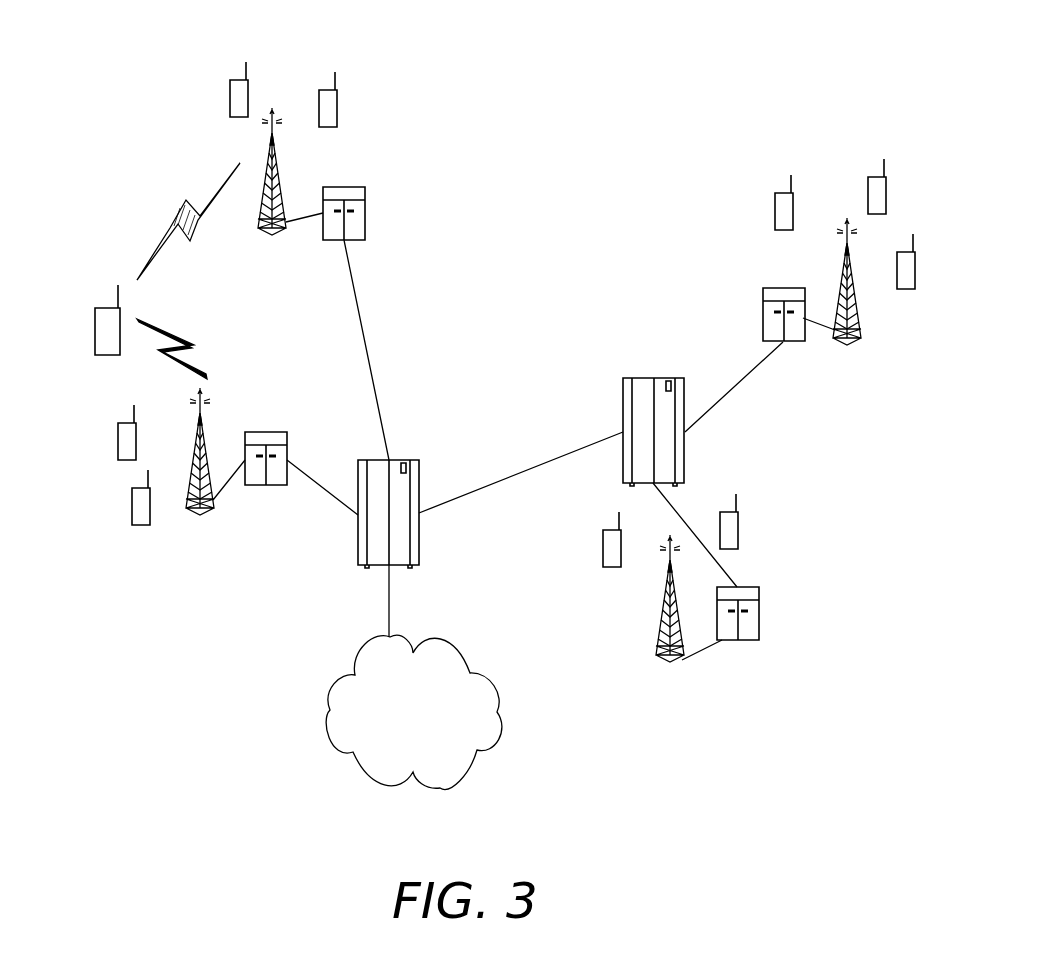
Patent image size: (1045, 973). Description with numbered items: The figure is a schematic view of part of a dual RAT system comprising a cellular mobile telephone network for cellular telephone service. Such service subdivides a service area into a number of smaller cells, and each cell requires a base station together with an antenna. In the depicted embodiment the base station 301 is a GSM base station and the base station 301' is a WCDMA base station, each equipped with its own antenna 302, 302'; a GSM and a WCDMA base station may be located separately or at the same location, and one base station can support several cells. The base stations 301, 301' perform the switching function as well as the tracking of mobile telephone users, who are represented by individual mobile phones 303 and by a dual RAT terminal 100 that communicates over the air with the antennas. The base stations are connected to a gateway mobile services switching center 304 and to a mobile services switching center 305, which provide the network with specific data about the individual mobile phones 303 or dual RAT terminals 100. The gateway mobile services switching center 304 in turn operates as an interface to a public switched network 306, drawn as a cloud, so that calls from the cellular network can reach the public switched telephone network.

The dual RAT terminal 100 is at (110, 308).
The base station 301 is at (564, 253).
The base station 301' is at (284, 437).
The antenna 302 is at (597, 250).
The antenna 302' is at (214, 481).
The mobile phone 303 is at (319, 90).
The gateway mobile services switching center 304 is at (404, 462).
The mobile services switching center 305 is at (640, 378).
The public switched network 306 is at (480, 750).